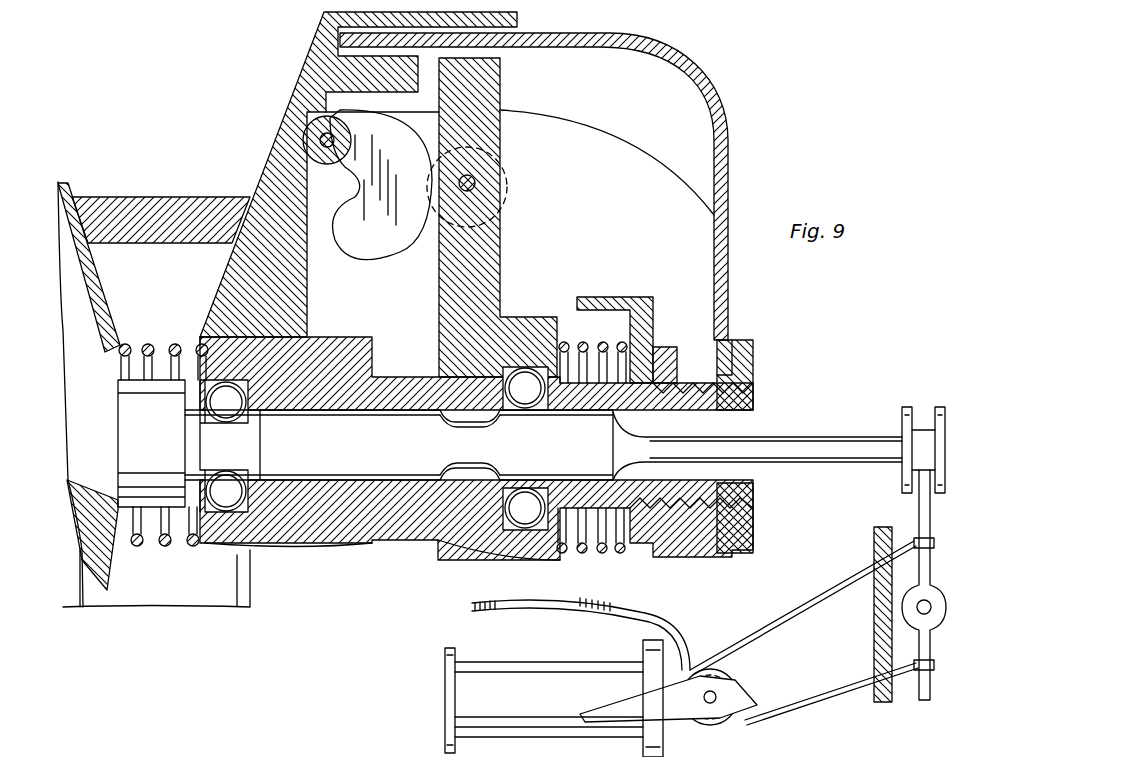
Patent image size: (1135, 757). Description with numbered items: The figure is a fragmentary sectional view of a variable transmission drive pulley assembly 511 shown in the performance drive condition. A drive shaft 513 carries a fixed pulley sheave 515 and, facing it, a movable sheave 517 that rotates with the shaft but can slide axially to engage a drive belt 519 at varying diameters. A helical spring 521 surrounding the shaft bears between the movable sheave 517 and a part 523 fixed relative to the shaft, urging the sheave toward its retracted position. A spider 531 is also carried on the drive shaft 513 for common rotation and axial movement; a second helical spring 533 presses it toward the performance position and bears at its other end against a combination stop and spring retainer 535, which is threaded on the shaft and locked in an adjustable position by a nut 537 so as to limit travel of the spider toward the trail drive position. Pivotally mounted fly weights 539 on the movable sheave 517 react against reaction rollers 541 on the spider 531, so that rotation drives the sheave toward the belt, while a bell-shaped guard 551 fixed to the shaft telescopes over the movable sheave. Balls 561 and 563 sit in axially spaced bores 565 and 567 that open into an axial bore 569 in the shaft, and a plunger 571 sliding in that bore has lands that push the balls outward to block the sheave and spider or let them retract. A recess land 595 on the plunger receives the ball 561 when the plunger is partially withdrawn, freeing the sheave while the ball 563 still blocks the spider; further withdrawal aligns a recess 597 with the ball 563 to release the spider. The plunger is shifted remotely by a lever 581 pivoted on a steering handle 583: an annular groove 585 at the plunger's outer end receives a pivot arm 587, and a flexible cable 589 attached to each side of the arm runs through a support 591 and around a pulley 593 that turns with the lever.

The variable transmission drive pulley assembly 511 is at (779, 150).
The drive shaft 513 is at (410, 497).
The fixed pulley sheave 515 is at (96, 290).
The movable sheave 517 is at (275, 178).
The drive belt 519 is at (163, 203).
The helical spring 521 is at (165, 548).
The part of the assembly 523 is at (115, 337).
The spider 531 is at (491, 256).
The helical spring 533 is at (590, 548).
The combination stop and spring retainer 535 is at (645, 305).
The nut 537 is at (668, 345).
The fly weight 539 is at (418, 262).
The reaction roller 541 is at (440, 176).
The bell-shaped guard 551 is at (700, 88).
The ball 561 is at (238, 372).
The ball 563 is at (526, 385).
The bore 565 is at (232, 398).
The bore 567 is at (547, 411).
The axial bore 569 is at (467, 470).
The plunger 571 is at (355, 452).
The lever 581 is at (597, 712).
The steering handle 583 is at (505, 672).
The annular groove 585 is at (914, 410).
The pivot arm 587 is at (958, 553).
The flexible cable 589 is at (795, 606).
The support 591 is at (872, 633).
The pulley 593 is at (760, 672).
The recess land 595 is at (175, 410).
The recess 597 is at (443, 457).